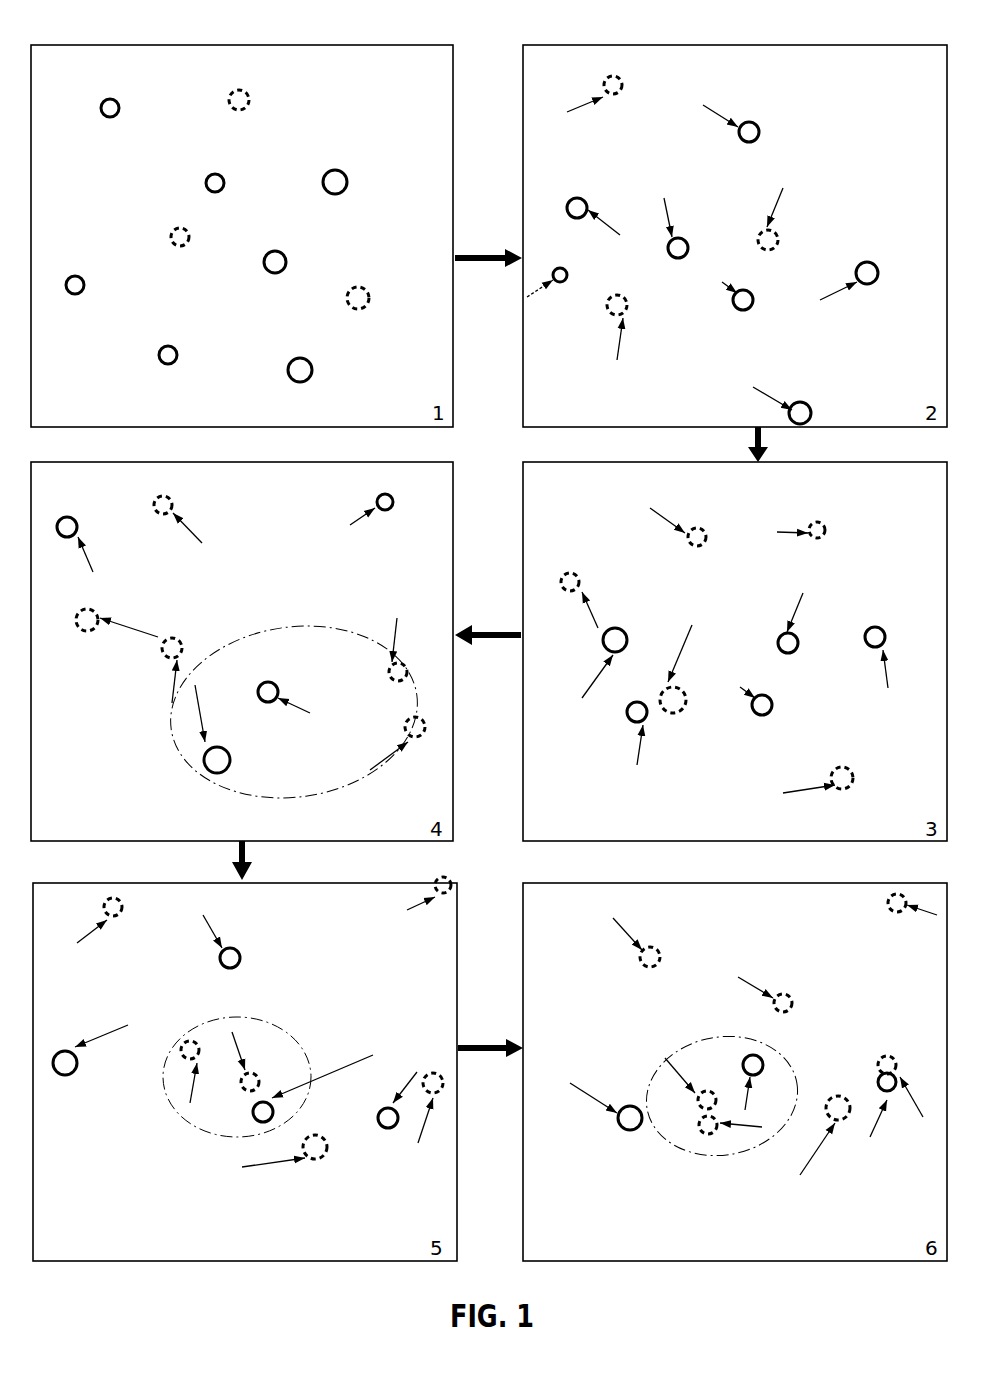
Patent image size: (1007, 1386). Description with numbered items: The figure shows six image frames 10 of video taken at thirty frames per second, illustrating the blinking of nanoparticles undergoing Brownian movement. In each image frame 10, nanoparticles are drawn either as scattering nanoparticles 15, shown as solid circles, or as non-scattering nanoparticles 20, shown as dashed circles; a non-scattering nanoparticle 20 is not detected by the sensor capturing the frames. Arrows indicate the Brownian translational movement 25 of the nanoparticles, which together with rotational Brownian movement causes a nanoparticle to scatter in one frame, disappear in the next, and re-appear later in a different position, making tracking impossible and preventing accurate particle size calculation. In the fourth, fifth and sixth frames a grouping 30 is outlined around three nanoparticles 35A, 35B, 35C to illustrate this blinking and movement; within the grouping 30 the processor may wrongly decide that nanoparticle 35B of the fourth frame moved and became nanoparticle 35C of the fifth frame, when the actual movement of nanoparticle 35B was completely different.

The image frame 10 is at (375, 45).
The scattering nanoparticle 15 is at (117, 100).
The non-scattering nanoparticle 20 is at (252, 97).
The Brownian translational movement 25 is at (580, 107).
The grouping 30 is at (170, 738).
The nanoparticle 1 35A is at (210, 773).
The nanoparticle 2 35B is at (263, 685).
The nanoparticle 3 35C is at (400, 665).